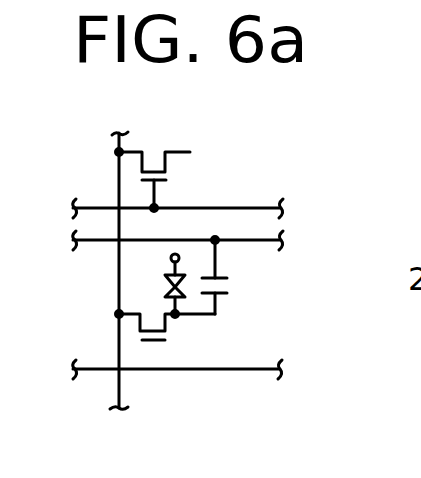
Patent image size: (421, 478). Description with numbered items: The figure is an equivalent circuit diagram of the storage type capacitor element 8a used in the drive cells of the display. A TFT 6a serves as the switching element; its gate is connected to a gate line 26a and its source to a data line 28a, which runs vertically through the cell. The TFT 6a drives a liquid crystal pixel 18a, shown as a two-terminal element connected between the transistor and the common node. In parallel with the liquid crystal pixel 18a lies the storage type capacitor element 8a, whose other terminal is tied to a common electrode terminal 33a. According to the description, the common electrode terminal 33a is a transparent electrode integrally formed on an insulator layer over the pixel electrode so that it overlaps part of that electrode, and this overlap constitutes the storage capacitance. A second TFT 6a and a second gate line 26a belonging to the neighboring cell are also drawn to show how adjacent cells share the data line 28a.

The TFT 6a is at (183, 177).
The gate line 26a is at (267, 208).
The common electrode terminal 33a is at (258, 242).
The data line 28a is at (117, 286).
The storage type capacitor element 8a is at (235, 285).
The liquid crystal pixel 18a is at (178, 299).